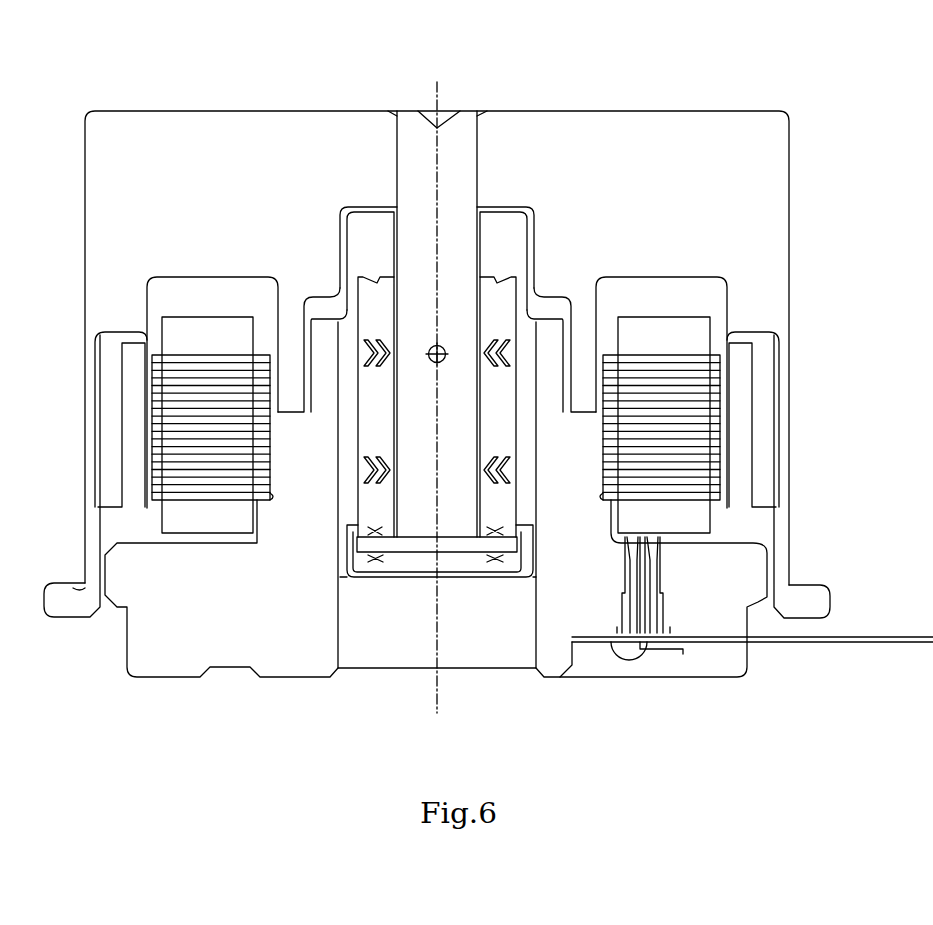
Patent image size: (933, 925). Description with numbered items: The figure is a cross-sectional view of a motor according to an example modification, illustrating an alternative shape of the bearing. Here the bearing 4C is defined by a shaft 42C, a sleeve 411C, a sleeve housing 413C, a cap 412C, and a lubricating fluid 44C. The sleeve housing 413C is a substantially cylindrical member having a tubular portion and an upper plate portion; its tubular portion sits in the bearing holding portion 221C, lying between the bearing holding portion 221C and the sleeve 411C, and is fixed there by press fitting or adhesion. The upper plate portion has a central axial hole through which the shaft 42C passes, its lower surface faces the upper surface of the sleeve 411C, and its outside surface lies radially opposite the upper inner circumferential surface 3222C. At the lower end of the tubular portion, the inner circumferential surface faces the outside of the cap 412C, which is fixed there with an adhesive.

The lubricating fluid 44C is at (392, 277).
The sleeve 411C is at (497, 300).
The sleeve housing 413C is at (532, 263).
The upper inner circumferential surface 3222C is at (517, 243).
The cap 412C is at (368, 560).
The shaft 42C is at (422, 510).
The bearing 4C is at (483, 597).
The bearing holding portion 221C is at (543, 467).